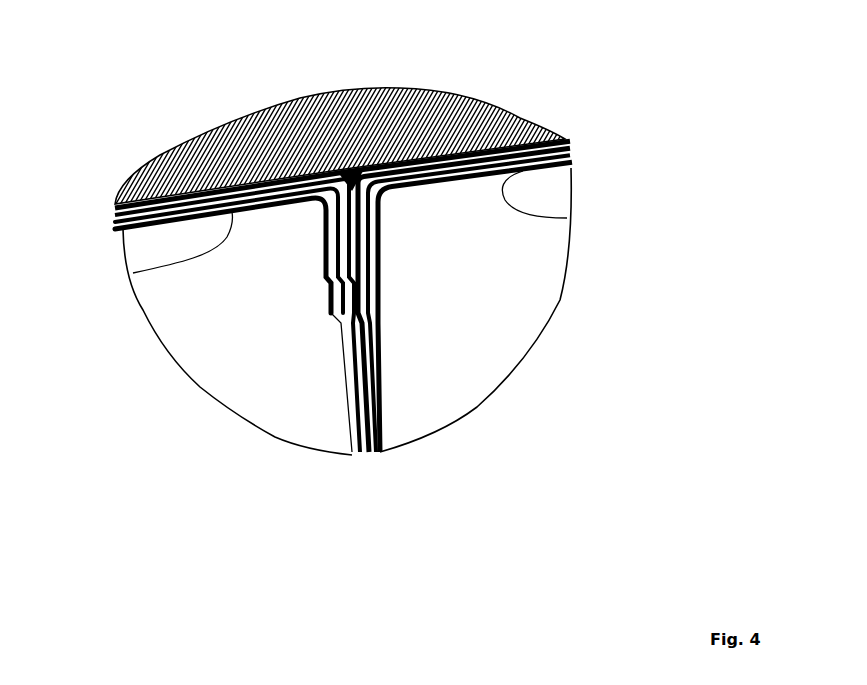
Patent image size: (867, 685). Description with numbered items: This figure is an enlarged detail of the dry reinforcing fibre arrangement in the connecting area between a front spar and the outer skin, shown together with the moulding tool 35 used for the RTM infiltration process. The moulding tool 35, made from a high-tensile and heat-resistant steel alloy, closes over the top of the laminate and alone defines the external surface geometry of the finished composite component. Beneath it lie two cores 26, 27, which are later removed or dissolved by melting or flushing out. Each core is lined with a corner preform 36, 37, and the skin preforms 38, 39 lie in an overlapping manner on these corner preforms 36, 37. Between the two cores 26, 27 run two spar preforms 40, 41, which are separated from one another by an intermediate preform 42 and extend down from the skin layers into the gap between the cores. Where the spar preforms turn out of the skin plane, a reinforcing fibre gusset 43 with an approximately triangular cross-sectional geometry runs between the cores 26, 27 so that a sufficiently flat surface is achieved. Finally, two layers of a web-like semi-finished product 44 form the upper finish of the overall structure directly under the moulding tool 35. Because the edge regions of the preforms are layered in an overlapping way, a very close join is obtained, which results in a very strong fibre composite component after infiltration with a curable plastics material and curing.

The core 26 is at (252, 314).
The core 27 is at (474, 302).
The moulding tool 35 is at (348, 136).
The corner preform 36 is at (133, 273).
The corner preform 37 is at (567, 218).
The skin preform 38 is at (115, 230).
The skin preform 39 is at (568, 160).
The spar preform 40 is at (357, 452).
The spar preform 41 is at (377, 452).
The intermediate preform 42 is at (367, 452).
The gusset 43 is at (372, 168).
The web-like semi-finished product 44 is at (565, 142).